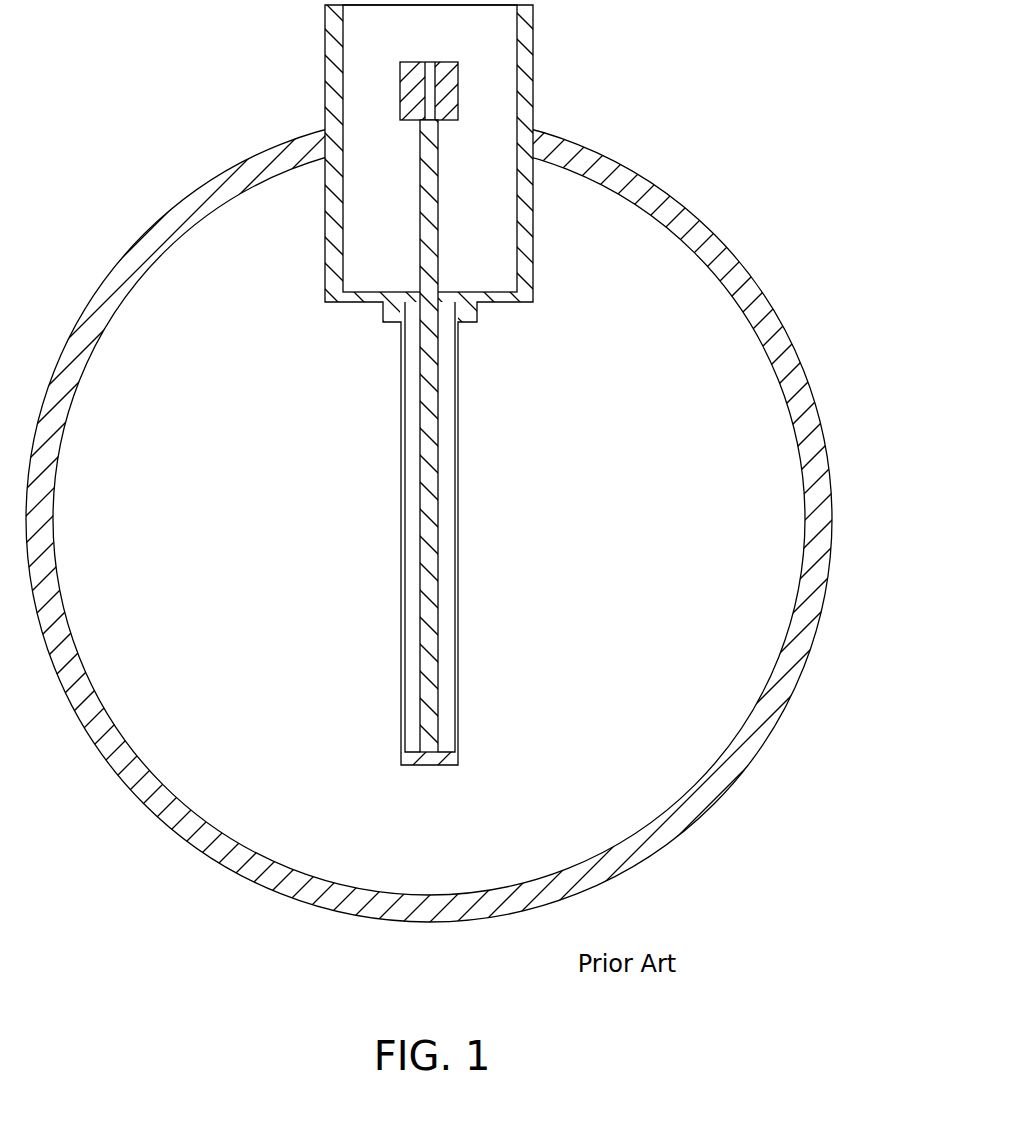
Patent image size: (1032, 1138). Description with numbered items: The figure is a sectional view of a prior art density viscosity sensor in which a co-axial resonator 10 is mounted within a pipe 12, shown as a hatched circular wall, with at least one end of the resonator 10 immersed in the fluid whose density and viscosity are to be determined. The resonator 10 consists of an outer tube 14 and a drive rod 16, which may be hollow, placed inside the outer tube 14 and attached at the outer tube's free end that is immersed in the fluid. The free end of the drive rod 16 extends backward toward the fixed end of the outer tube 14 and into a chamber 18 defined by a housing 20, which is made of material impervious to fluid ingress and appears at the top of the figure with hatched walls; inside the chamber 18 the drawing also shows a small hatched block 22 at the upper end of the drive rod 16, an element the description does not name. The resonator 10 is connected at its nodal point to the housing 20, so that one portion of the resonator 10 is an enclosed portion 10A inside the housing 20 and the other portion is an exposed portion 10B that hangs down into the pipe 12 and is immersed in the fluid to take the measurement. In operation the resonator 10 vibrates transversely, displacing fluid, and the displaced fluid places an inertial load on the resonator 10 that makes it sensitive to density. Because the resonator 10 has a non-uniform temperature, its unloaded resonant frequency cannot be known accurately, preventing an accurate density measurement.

The co-axial resonator 10 is at (516, 569).
The enclosed portion 10A is at (516, 569).
The exposed portion 10B is at (516, 569).
The pipe 12 is at (802, 362).
The outer tube 14 is at (459, 737).
The drive rod 16 is at (430, 640).
The chamber 18 is at (375, 230).
The housing 20 is at (325, 82).
The plug 22 is at (458, 70).